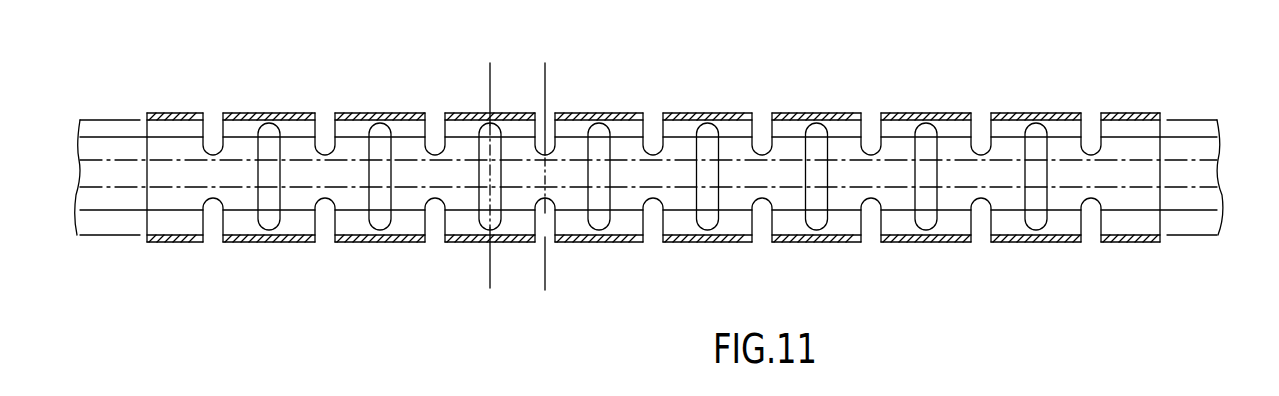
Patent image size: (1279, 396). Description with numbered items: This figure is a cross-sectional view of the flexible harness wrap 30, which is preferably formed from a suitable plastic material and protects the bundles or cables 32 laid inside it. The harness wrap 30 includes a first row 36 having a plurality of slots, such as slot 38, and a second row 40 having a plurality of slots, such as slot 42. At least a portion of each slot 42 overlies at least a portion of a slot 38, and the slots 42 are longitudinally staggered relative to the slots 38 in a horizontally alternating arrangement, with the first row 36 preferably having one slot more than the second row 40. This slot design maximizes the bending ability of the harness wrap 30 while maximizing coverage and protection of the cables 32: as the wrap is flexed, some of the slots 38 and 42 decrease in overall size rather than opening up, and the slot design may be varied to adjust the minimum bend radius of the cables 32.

The flexible harness wrap 30 is at (287, 102).
The bundles or cables 32 is at (350, 138).
The first row 36 is at (487, 82).
The slot 38 is at (478, 226).
The second row 40 is at (547, 82).
The slot 42 is at (652, 110).